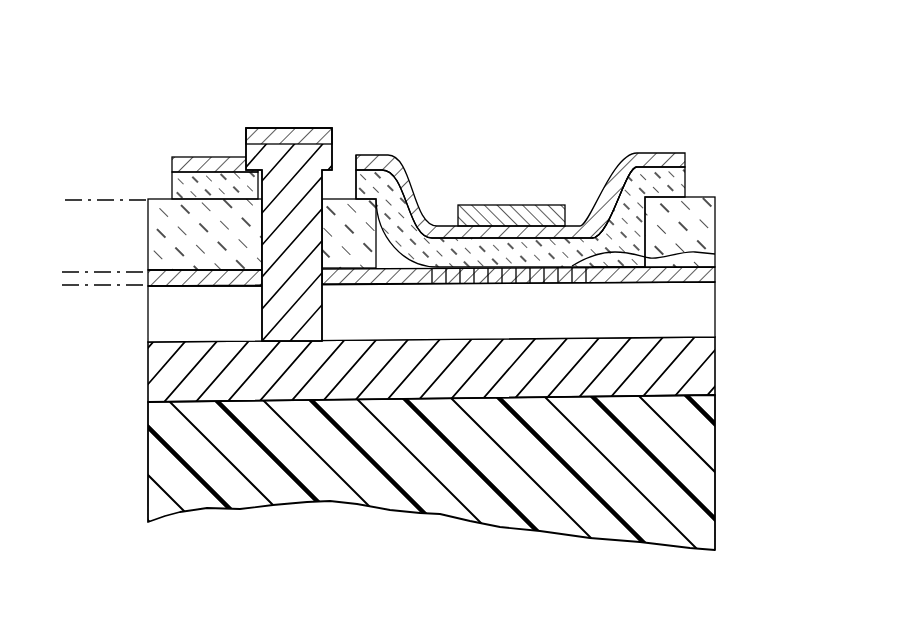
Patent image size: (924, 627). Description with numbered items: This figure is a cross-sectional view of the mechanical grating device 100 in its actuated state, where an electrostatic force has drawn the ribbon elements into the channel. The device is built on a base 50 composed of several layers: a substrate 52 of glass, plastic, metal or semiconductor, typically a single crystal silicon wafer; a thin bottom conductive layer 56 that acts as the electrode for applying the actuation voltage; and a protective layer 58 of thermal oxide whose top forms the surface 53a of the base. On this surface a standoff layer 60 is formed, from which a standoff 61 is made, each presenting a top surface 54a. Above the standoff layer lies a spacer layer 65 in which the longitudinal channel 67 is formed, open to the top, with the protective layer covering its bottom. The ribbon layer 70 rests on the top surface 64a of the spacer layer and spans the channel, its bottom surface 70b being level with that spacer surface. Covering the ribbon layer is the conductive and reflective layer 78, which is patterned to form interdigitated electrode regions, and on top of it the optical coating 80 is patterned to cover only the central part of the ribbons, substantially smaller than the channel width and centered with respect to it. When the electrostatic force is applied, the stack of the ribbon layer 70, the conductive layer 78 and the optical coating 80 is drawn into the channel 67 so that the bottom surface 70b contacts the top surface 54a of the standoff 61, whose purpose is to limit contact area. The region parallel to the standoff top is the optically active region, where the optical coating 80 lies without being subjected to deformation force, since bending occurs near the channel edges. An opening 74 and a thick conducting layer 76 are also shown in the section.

The mechanical grating device 100 is at (547, 101).
The base 50 is at (125, 406).
The substrate 52 is at (705, 447).
The bottom conductive layer 56 is at (705, 362).
The protective layer 58 is at (705, 312).
The standoff layer 60 is at (715, 272).
The surface of the base 53a is at (73, 288).
The top surface of standoffs 54a is at (102, 270).
The top surface of the spacer layer 64a is at (82, 200).
The channel 67 is at (636, 247).
The ribbon layer 70 is at (680, 179).
The bottom surface of the ribbon elements 70b is at (495, 272).
The spacer layer 65 is at (683, 229).
The standoff 61 is at (688, 253).
The reflective layer 78 is at (688, 153).
The optical coating 80 is at (470, 205).
The opening 74 is at (258, 220).
The thick conducting layer 76 is at (265, 157).